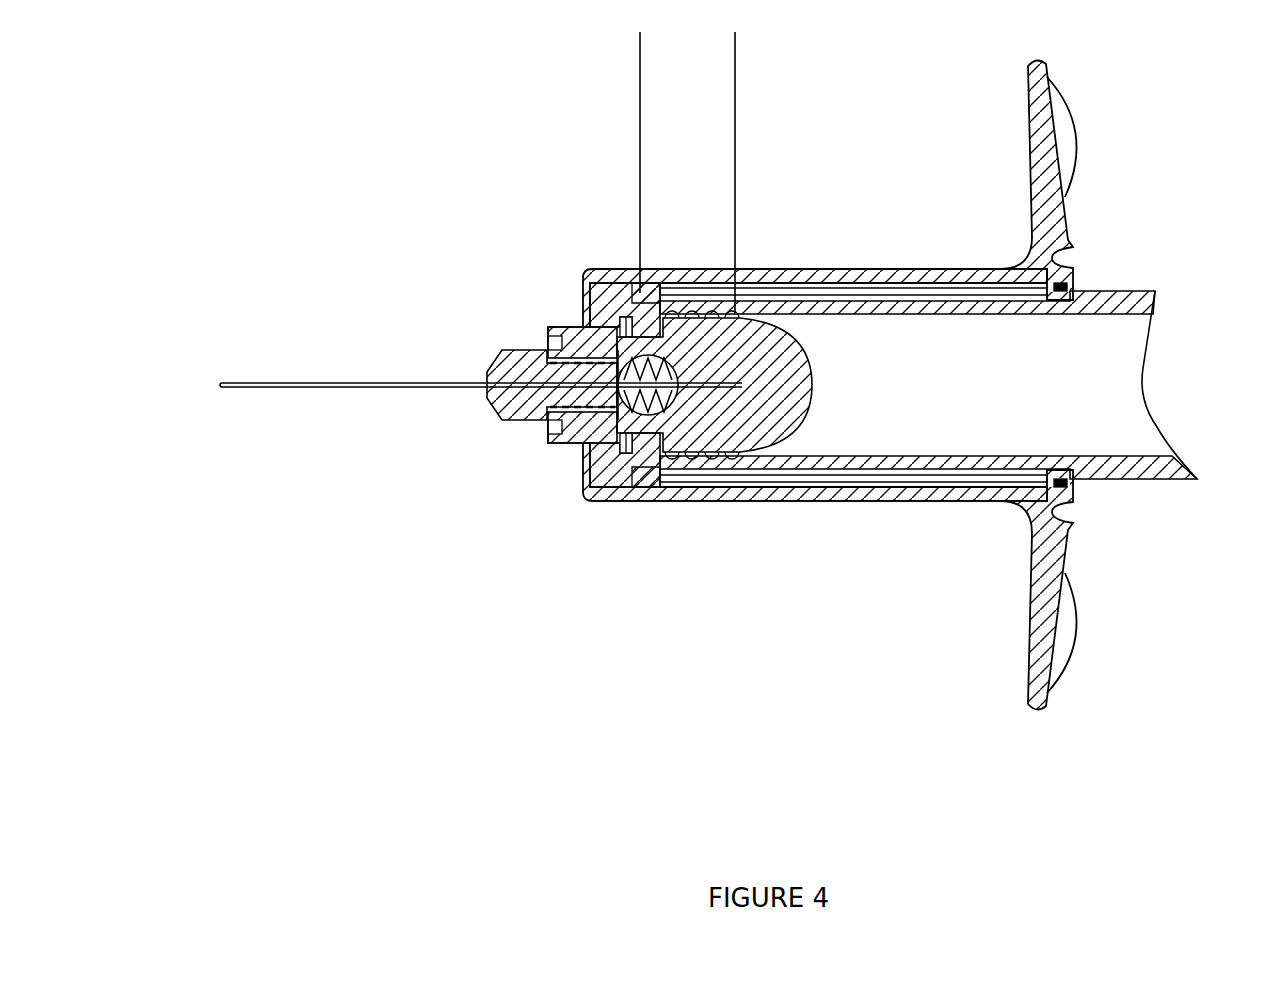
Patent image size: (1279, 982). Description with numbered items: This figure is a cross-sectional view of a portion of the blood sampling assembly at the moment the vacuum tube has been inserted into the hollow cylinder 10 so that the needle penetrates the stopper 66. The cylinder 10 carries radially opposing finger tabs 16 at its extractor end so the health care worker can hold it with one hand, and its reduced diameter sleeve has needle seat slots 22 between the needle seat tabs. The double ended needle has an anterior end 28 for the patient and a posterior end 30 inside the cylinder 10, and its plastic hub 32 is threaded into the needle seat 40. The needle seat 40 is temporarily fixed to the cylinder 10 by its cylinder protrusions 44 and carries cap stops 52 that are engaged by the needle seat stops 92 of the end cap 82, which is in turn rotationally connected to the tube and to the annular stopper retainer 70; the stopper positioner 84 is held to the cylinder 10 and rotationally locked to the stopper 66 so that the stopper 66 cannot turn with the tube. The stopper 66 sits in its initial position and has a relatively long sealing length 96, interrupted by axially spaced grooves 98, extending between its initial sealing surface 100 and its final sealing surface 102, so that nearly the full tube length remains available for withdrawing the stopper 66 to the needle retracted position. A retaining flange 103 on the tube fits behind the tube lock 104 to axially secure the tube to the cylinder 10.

The cylinder 10 is at (815, 329).
The finger tabs 16 is at (1113, 383).
The needle seat slots 22 is at (501, 344).
The anterior end 28 is at (451, 352).
The posterior end 30 is at (735, 508).
The plastic hub 32 is at (465, 410).
The needle seat 40 is at (480, 494).
The cylinder protrusions 44 is at (446, 310).
The cap stops 52 is at (484, 538).
The stopper 66 is at (928, 464).
The stopper retainer 70 is at (664, 567).
The end cap 82 is at (545, 544).
The stopper positioner 84 is at (542, 578).
The needle seat stops 92 is at (511, 245).
The sealing length 96 is at (691, 172).
The axially spaced grooves 98 is at (728, 532).
The initial sealing surface 100 is at (853, 285).
The final sealing surface 102 is at (575, 287).
The retaining flange 103 is at (1154, 242).
The tube lock 104 is at (1146, 534).